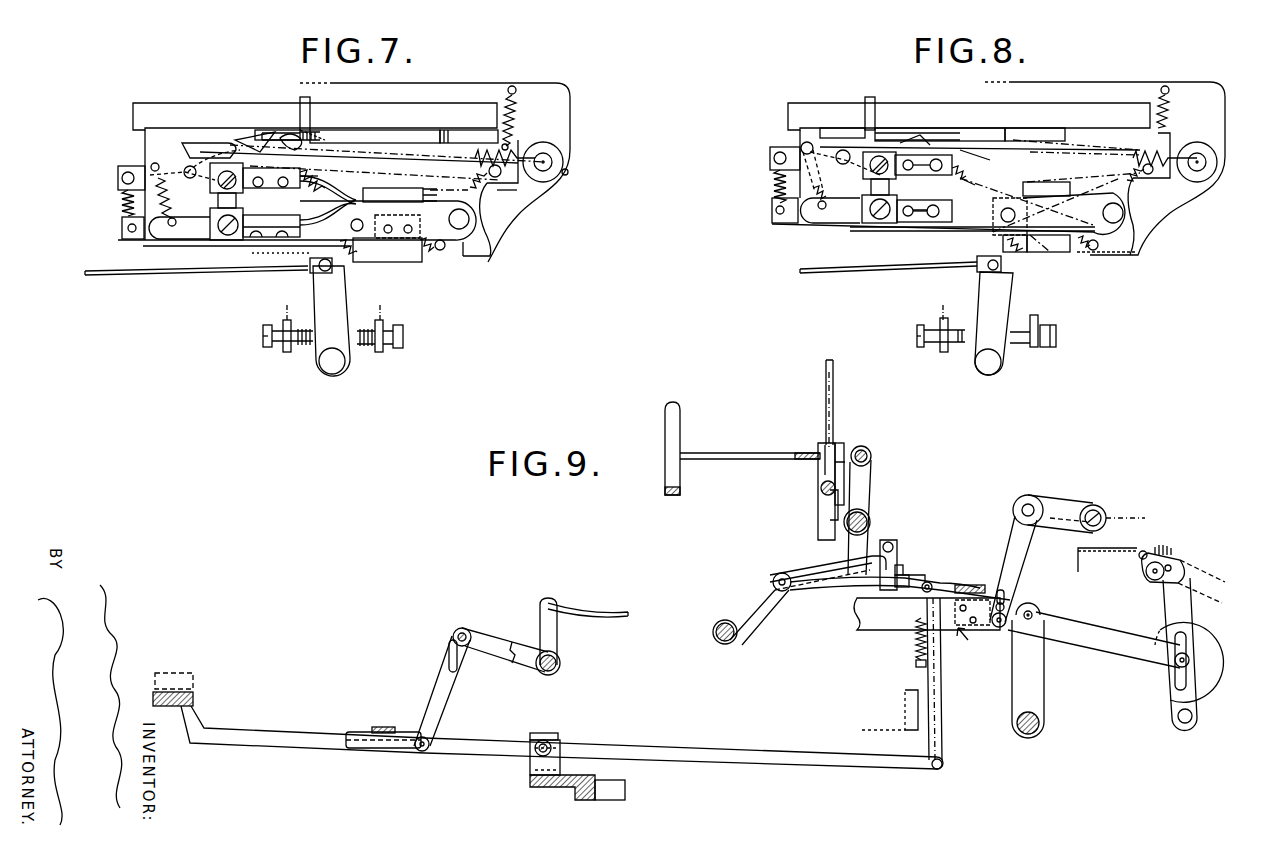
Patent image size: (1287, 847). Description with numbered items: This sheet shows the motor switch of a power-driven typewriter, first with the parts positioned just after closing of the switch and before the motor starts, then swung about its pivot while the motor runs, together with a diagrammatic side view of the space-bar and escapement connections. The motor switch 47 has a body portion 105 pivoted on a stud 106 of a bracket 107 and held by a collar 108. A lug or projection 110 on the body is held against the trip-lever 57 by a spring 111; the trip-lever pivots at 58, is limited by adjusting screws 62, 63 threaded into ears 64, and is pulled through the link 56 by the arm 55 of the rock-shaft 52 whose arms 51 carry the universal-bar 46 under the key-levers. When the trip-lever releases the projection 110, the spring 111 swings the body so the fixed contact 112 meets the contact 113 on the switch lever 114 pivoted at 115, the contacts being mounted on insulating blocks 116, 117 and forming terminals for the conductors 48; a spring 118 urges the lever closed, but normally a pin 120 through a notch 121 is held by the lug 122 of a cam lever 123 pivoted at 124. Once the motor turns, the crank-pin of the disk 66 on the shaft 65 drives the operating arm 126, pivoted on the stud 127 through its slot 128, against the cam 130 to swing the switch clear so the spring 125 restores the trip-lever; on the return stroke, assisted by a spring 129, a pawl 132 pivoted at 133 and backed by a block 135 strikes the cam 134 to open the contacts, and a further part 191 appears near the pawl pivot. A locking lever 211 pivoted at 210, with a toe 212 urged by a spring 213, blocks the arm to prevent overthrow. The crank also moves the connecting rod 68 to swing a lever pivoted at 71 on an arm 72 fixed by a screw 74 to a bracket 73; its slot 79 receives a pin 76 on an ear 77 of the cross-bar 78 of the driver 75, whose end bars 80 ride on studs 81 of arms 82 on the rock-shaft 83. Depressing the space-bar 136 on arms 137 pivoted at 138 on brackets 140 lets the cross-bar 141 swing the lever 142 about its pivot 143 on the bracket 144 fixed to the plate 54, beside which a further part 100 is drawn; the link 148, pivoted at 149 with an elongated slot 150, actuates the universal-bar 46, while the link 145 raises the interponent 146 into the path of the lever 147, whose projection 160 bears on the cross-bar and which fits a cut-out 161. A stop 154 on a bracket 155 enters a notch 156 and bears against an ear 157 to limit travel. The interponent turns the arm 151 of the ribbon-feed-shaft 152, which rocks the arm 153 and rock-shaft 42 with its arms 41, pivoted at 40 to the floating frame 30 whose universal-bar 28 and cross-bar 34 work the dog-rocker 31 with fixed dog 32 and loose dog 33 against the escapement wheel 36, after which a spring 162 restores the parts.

In FIG. 9, the universal-bar 28 is at (675, 497).
In FIG. 9, the floating frame 30 is at (748, 460).
In FIG. 9, the dog-rocker 31 is at (818, 510).
In FIG. 9, the fixed dog 32 is at (826, 445).
In FIG. 9, the loose dog 33 is at (842, 444).
In FIG. 9, the cross-bar 34 is at (805, 452).
In FIG. 9, the escapement wheel 36 is at (825, 385).
In FIG. 9, the pivotal connection 40 is at (871, 455).
In FIG. 9, the upwardly extending arms 41 is at (870, 490).
In FIG. 9, the rock-shaft 42 is at (870, 522).
In FIG. 9, the universal-bar 46 is at (460, 630).
In FIG. 7, the motor switch 47 is at (230, 259).
In FIG. 7, the conductors 48 is at (348, 196).
In FIG. 8, the conductors 48 is at (925, 175).
In FIG. 9, the arms 51 is at (512, 665).
In FIG. 9, the rock-shaft 52 is at (558, 668).
In FIG. 9, the cross-bar or plate 54 is at (558, 787).
In FIG. 9, the upwardly extending arm 55 is at (560, 622).
In FIG. 7, the link 56 is at (116, 276).
In FIG. 8, the link 56 is at (907, 270).
In FIG. 9, the link 56 is at (612, 610).
In FIG. 7, the trip-lever 57 is at (331, 321).
In FIG. 8, the trip-lever 57 is at (994, 323).
In FIG. 7, the pivot 58 is at (332, 375).
In FIG. 8, the pivot 58 is at (987, 375).
In FIG. 7, the adjusting screw 62 is at (366, 346).
In FIG. 8, the adjusting screw 62 is at (1022, 346).
In FIG. 7, the adjusting screw 63 is at (303, 344).
In FIG. 8, the adjusting screw 63 is at (955, 344).
In FIG. 7, the ears 64 is at (282, 350).
In FIG. 8, the ears 64 is at (945, 325).
In FIG. 9, the motor shaft 65 is at (1192, 657).
In FIG. 9, the disk 66 is at (1215, 683).
In FIG. 9, the connecting rod 68 is at (1090, 648).
In FIG. 9, the pivot 71 is at (1022, 500).
In FIG. 9, the arm 72 is at (1062, 496).
In FIG. 9, the bracket 73 is at (1107, 548).
In FIG. 9, the screw 74 is at (1100, 510).
In FIG. 9, the actuating frame or driver 75 is at (968, 650).
In FIG. 9, the pin 76 is at (1006, 606).
In FIG. 9, the ear 77 is at (1005, 603).
In FIG. 9, the cross-bar 78 is at (958, 606).
In FIG. 9, the slot 79 is at (1002, 590).
In FIG. 9, the end bars 80 is at (863, 632).
In FIG. 9, the studs 81 is at (1042, 610).
In FIG. 9, the upwardly extending arms 82 is at (1028, 679).
In FIG. 9, the rock-shaft 83 is at (1030, 735).
In FIG. 9, the block 100 is at (606, 800).
In FIG. 7, the body portion 105 is at (470, 244).
In FIG. 8, the body portion 105 is at (787, 226).
In FIG. 7, the stud 106 is at (545, 172).
In FIG. 8, the stud 106 is at (1214, 165).
In FIG. 7, the bracket 107 is at (572, 130).
In FIG. 8, the bracket 107 is at (1155, 225).
In FIG. 7, the collar 108 is at (568, 174).
In FIG. 7, the lug or projection 110 is at (366, 262).
In FIG. 8, the lug or projection 110 is at (1020, 253).
In FIG. 7, the spring 111 is at (437, 252).
In FIG. 8, the spring 111 is at (968, 176).
In FIG. 7, the fixed contact 112 is at (212, 196).
In FIG. 8, the fixed contact 112 is at (865, 195).
In FIG. 7, the contact 113 is at (208, 228).
In FIG. 8, the contact 113 is at (889, 188).
In FIG. 7, the switch lever 114 is at (306, 246).
In FIG. 8, the switch lever 114 is at (822, 230).
In FIG. 7, the pivot 115 is at (487, 228).
In FIG. 8, the pivot 115 is at (1137, 256).
In FIG. 7, the insulating block 116 is at (265, 188).
In FIG. 8, the insulating block 116 is at (905, 150).
In FIG. 7, the insulating block 117 is at (212, 240).
In FIG. 8, the insulating block 117 is at (870, 224).
In FIG. 7, the spring 118 is at (142, 242).
In FIG. 8, the spring 118 is at (800, 146).
In FIG. 7, the pin 120 is at (387, 250).
In FIG. 8, the pin 120 is at (1001, 215).
In FIG. 7, the notch 121 is at (326, 277).
In FIG. 8, the notch 121 is at (1003, 236).
In FIG. 7, the lug 122 is at (392, 200).
In FIG. 8, the lug 122 is at (1040, 197).
In FIG. 7, the cam lever 123 is at (504, 192).
In FIG. 8, the cam lever 123 is at (1158, 180).
In FIG. 7, the pivot 124 is at (200, 147).
In FIG. 8, the pivot 124 is at (845, 165).
In FIG. 7, the spring 125 is at (470, 182).
In FIG. 8, the spring 125 is at (1050, 253).
In FIG. 7, the operating arm 126 is at (326, 132).
In FIG. 8, the operating arm 126 is at (850, 130).
In FIG. 9, the operating arm 126 is at (1165, 612).
In FIG. 9, the stud 127 is at (1183, 725).
In FIG. 9, the slot 128 is at (1178, 685).
In FIG. 7, the spring 129 is at (300, 134).
In FIG. 8, the spring 129 is at (1170, 146).
In FIG. 9, the spring 129 is at (1158, 545).
In FIG. 7, the cam 130 is at (240, 140).
In FIG. 8, the cam 130 is at (900, 140).
In FIG. 7, the pawl 132 is at (382, 137).
In FIG. 8, the pawl 132 is at (968, 137).
In FIG. 7, the pivot 133 is at (300, 148).
In FIG. 9, the pivot 133 is at (1146, 572).
In FIG. 7, the cam 134 is at (462, 143).
In FIG. 8, the cam 134 is at (1095, 141).
In FIG. 7, the block 135 is at (195, 103).
In FIG. 8, the block 135 is at (1018, 106).
In FIG. 9, the space-bar 136 is at (194, 695).
In FIG. 9, the arms 137 is at (265, 752).
In FIG. 9, the pivot 138 is at (541, 740).
In FIG. 9, the brackets 140 is at (530, 770).
In FIG. 9, the cross-bar 141 is at (382, 727).
In FIG. 9, the lever 142 is at (723, 767).
In FIG. 9, the pivot 143 is at (556, 760).
In FIG. 9, the bracket 144 is at (560, 736).
In FIG. 9, the link 145 is at (941, 708).
In FIG. 9, the interponent 146 is at (835, 588).
In FIG. 9, the lever 147 is at (952, 582).
In FIG. 9, the link 148 is at (452, 690).
In FIG. 9, the pivotal connection 149 is at (418, 752).
In FIG. 9, the slot 150 is at (449, 650).
In FIG. 9, the arm 151 is at (760, 608).
In FIG. 9, the ribbon-feed-shaft 152 is at (735, 640).
In FIG. 9, the downwardly projecting arm 153 is at (840, 560).
In FIG. 9, the stop 154 is at (915, 590).
In FIG. 9, the bracket 155 is at (878, 567).
In FIG. 9, the notch 156 is at (900, 586).
In FIG. 9, the ear 157 is at (898, 560).
In FIG. 9, the projection 160 is at (982, 585).
In FIG. 9, the cut-out 161 is at (928, 580).
In FIG. 9, the spring 162 is at (916, 665).
In FIG. 7, the pin 191 is at (302, 97).
In FIG. 8, the pin 191 is at (866, 97).
In FIG. 9, the pin 191 is at (1172, 565).
In FIG. 7, the pivot 210 is at (188, 168).
In FIG. 8, the pivot 210 is at (838, 152).
In FIG. 7, the locking lever 211 is at (120, 176).
In FIG. 8, the locking lever 211 is at (772, 158).
In FIG. 7, the toe 212 is at (262, 135).
In FIG. 8, the toe 212 is at (915, 138).
In FIG. 7, the spring 213 is at (122, 205).
In FIG. 8, the spring 213 is at (774, 193).